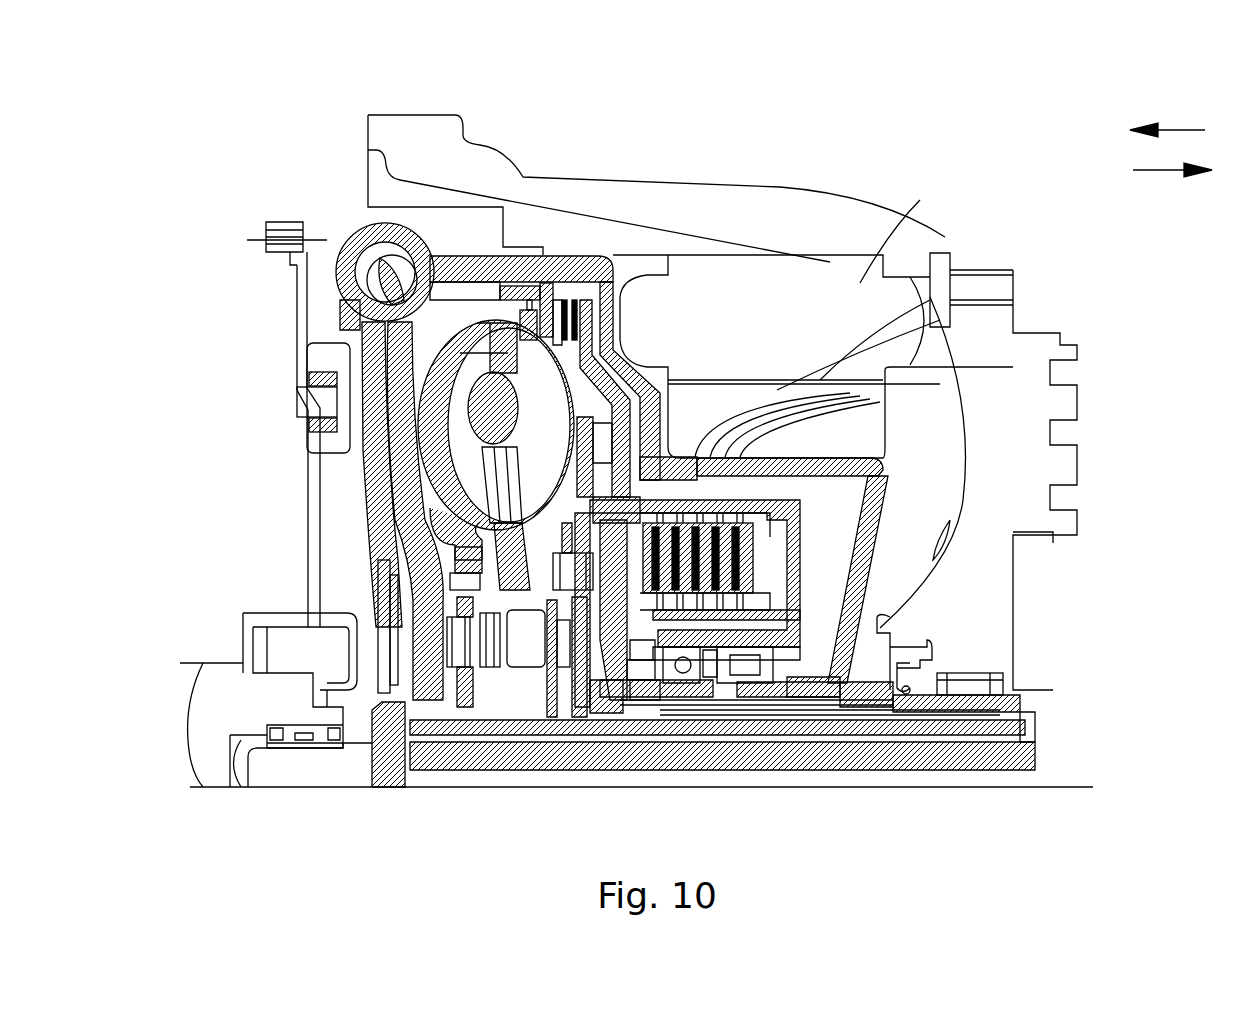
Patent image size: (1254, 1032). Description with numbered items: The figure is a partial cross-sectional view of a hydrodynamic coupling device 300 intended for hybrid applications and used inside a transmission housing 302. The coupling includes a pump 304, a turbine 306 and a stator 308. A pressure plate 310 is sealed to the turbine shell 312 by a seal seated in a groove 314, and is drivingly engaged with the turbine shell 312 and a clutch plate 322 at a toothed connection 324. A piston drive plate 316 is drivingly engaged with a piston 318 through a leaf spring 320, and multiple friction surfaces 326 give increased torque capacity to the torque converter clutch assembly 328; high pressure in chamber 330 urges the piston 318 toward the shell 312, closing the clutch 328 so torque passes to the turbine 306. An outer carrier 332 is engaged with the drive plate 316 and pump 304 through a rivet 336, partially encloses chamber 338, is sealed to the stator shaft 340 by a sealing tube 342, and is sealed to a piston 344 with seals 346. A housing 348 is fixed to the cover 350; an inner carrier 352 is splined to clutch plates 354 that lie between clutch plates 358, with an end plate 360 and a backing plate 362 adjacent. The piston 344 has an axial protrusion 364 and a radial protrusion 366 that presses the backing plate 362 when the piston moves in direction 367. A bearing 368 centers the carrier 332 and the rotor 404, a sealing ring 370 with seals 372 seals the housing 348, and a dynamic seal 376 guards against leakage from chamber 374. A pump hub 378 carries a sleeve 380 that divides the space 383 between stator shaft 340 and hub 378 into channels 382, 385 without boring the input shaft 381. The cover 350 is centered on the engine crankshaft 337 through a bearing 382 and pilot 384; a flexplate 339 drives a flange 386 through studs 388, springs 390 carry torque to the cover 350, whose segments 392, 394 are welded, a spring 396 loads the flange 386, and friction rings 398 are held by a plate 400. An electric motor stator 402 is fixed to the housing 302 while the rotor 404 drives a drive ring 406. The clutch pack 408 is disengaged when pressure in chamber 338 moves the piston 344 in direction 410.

The hydrodynamic coupling device 300 is at (1069, 114).
The transmission housing 302 is at (392, 133).
The pump 304 is at (508, 355).
The turbine 306 is at (447, 438).
The stator 308 is at (483, 470).
The pressure plate 310 is at (540, 262).
The turbine shell 312 is at (487, 262).
The groove 314 is at (530, 262).
The piston drive plate 316 is at (645, 400).
The piston 318 is at (640, 390).
The leaf spring 320 is at (660, 440).
The clutch plate 322 is at (605, 300).
The toothed connection 324 is at (574, 298).
The friction surfaces 326 is at (624, 360).
The torque converter clutch assembly 328 is at (580, 275).
The chamber 330 is at (650, 410).
The outer carrier 332 is at (525, 672).
The rivet 336 is at (452, 690).
The engine crankshaft 337 is at (220, 703).
The chamber 338 is at (597, 628).
The flexplate 339 is at (293, 362).
The stator shaft 340 is at (1027, 730).
The sealing tube 342 is at (660, 705).
The piston 344 is at (566, 592).
The seals 346 is at (640, 700).
The housing 348 is at (875, 500).
The cover 350 is at (380, 784).
The inner carrier 352 is at (840, 575).
The clutch plates 354 is at (820, 382).
The clutch plates 358 is at (840, 660).
The end plate 360 is at (940, 280).
The backing plate 362 is at (840, 600).
The axial protrusion 364 is at (880, 457).
The radial protrusion 366 is at (840, 525).
The direction 367 is at (1166, 130).
The bearing 368 is at (700, 700).
The sealing ring 370 is at (690, 675).
The seals 372 is at (795, 700).
The chamber 374 is at (630, 690).
The dynamic seal 376 is at (840, 700).
The pump hub 378 is at (1013, 700).
The sleeve 380 is at (897, 723).
The input shaft 381 is at (1037, 755).
The channel 382 is at (292, 727).
The space 383 is at (1007, 720).
The pilot 384 is at (300, 789).
The channel 385 is at (920, 707).
The flange 386 is at (395, 530).
The studs 388 is at (323, 400).
The springs 390 is at (355, 225).
The segment 392 is at (445, 260).
The segment 394 is at (372, 250).
The spring 396 is at (340, 348).
The friction rings 398 is at (393, 582).
The plate 400 is at (382, 603).
The electric motor stator 402 is at (857, 287).
The rotor 404 is at (1007, 327).
The drive ring 406 is at (950, 653).
The clutch pack 408 is at (805, 510).
The direction 410 is at (1160, 170).